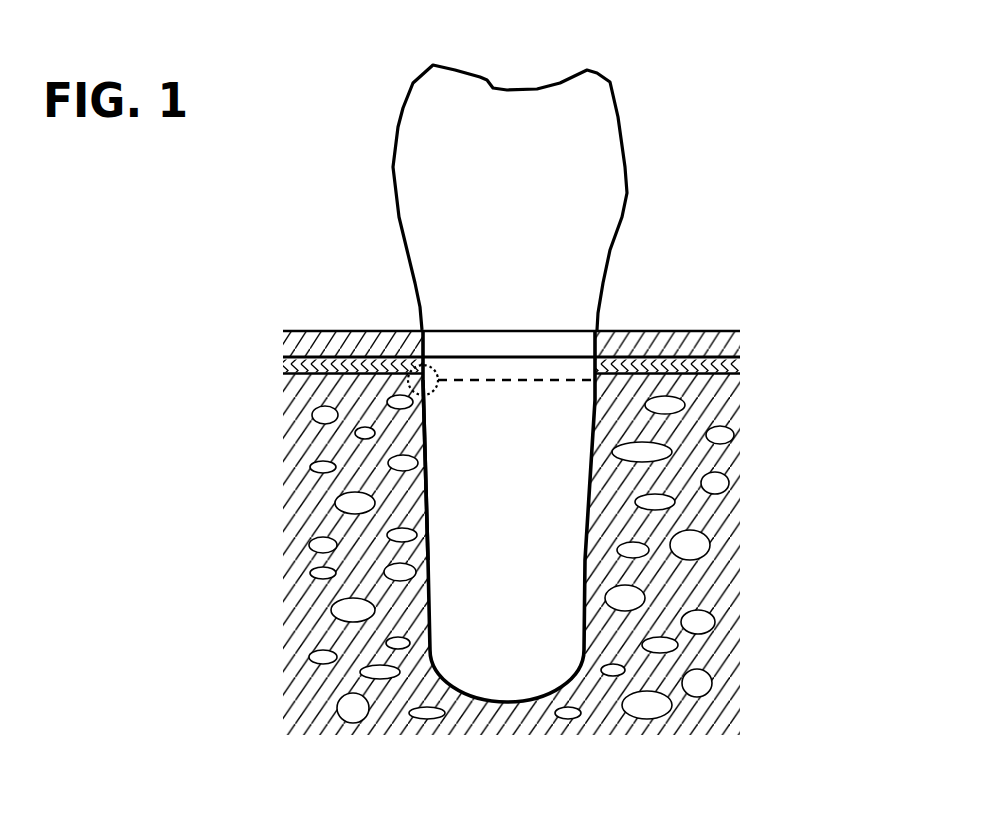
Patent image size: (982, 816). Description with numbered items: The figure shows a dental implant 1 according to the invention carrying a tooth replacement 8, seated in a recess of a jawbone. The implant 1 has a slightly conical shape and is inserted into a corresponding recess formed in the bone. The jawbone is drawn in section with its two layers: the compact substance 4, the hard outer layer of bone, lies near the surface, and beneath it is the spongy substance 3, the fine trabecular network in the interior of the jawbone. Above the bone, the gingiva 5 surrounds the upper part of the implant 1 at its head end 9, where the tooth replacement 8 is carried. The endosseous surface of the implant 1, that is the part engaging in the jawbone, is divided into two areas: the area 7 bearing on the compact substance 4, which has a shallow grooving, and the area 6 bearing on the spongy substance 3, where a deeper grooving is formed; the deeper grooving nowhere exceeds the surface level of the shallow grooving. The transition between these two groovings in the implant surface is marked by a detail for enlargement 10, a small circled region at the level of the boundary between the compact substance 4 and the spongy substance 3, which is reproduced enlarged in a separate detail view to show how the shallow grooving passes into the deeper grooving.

The implant 1 is at (510, 592).
The spongy substance 3 is at (307, 438).
The compact substance 4 is at (290, 364).
The gingiva 5 is at (300, 345).
The area bearing on the spongy substance 6 is at (425, 523).
The area bearing on the compact substance 7 is at (533, 368).
The tooth replacement 8 is at (600, 155).
The head end 9 is at (487, 352).
The detail for enlargement 10 is at (413, 372).